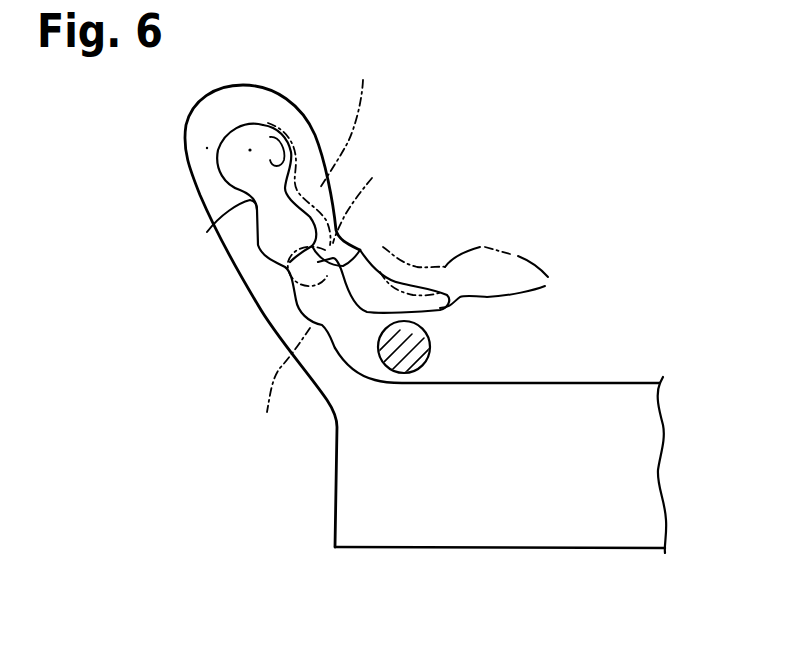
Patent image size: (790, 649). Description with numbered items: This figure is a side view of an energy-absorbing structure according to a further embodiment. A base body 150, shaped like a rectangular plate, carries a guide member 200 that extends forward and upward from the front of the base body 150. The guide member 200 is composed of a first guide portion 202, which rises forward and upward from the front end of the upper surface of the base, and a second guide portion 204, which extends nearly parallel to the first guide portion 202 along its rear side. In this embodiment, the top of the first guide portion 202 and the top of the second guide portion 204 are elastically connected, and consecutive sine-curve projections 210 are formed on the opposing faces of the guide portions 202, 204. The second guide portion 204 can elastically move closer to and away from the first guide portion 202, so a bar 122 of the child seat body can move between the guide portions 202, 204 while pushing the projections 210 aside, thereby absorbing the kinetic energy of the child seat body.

The guide member 200 is at (170, 163).
The first guide portion 202 is at (253, 268).
The sine-curve projections 210 is at (278, 134).
The second guide portion 204 is at (548, 277).
The bar 122 is at (433, 355).
The base body 150 is at (533, 505).